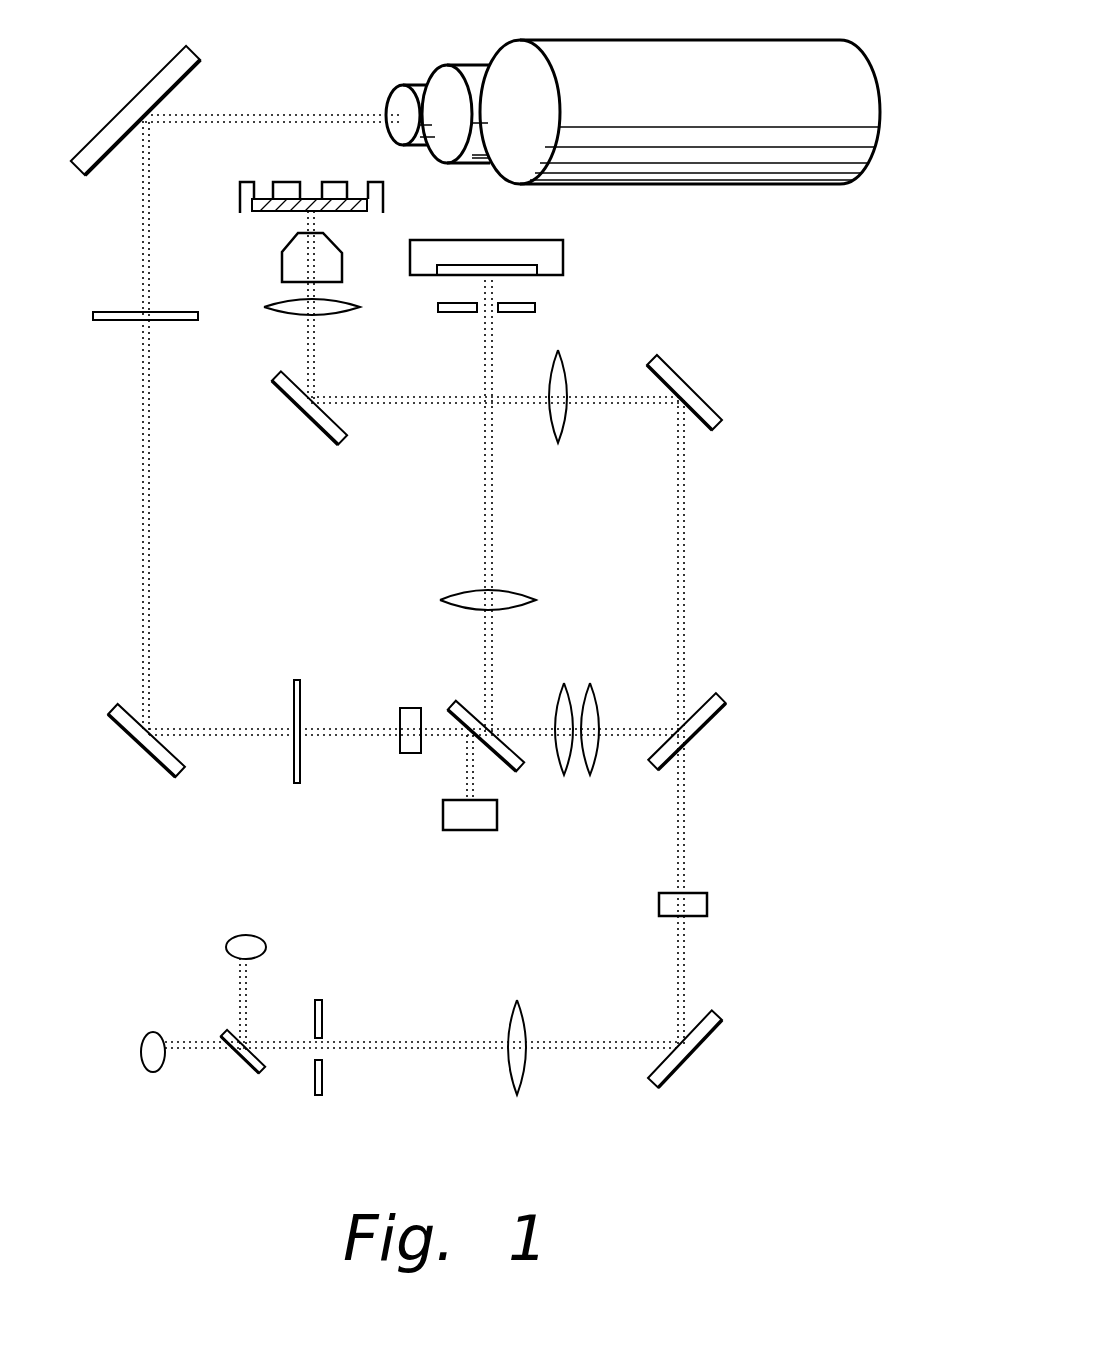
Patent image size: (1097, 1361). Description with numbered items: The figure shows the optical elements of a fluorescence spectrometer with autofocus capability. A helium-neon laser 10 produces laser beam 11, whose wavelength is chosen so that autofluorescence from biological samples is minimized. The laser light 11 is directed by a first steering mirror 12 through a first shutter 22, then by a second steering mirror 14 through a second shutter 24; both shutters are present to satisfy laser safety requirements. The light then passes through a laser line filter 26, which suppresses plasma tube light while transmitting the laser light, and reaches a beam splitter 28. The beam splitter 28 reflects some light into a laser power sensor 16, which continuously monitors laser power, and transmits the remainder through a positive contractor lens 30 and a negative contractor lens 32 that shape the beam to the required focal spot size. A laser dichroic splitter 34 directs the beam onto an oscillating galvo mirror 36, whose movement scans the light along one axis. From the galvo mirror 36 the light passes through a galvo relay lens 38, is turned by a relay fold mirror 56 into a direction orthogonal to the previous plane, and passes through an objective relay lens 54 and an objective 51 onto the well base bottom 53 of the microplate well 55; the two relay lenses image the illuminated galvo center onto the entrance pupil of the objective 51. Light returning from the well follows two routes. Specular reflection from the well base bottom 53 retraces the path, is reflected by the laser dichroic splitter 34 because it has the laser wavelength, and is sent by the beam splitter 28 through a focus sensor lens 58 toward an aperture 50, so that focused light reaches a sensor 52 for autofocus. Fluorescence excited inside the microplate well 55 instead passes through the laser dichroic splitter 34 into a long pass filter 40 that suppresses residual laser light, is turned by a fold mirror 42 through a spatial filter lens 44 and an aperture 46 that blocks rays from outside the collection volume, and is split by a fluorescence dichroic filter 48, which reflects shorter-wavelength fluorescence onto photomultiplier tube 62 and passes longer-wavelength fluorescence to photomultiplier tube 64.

The laser 10 is at (790, 40).
The laser beam 11 is at (300, 113).
The first steering mirror 12 is at (195, 52).
The second steering mirror 14 is at (178, 778).
The laser power sensor 16 is at (490, 831).
The first shutter 22 is at (193, 312).
The second shutter 24 is at (300, 680).
The laser line filter 26 is at (415, 708).
The beam splitter 28 is at (515, 771).
The positive contractor lens 30 is at (566, 684).
The negative contractor lens 32 is at (590, 776).
The laser dichroic splitter 34 is at (712, 696).
The oscillating galvo mirror 36 is at (665, 365).
The galvo relay lens 38 is at (558, 444).
The long pass filter 40 is at (700, 893).
The fold mirror 42 is at (712, 1013).
The spatial filter lens 44 is at (525, 1030).
The aperture 46 is at (322, 1096).
The fluorescence dichroic filter 48 is at (262, 1074).
The aperture 50 is at (537, 307).
The objective 51 is at (282, 258).
The sensor 52 is at (540, 240).
The well base bottom 53 is at (335, 212).
The objective relay lens 54 is at (280, 314).
The microplate well 55 is at (388, 197).
The relay fold mirror 56 is at (338, 445).
The focus sensor lens 58 is at (536, 600).
The photomultiplier tube 62 is at (252, 935).
The photomultiplier tube 64 is at (160, 1033).